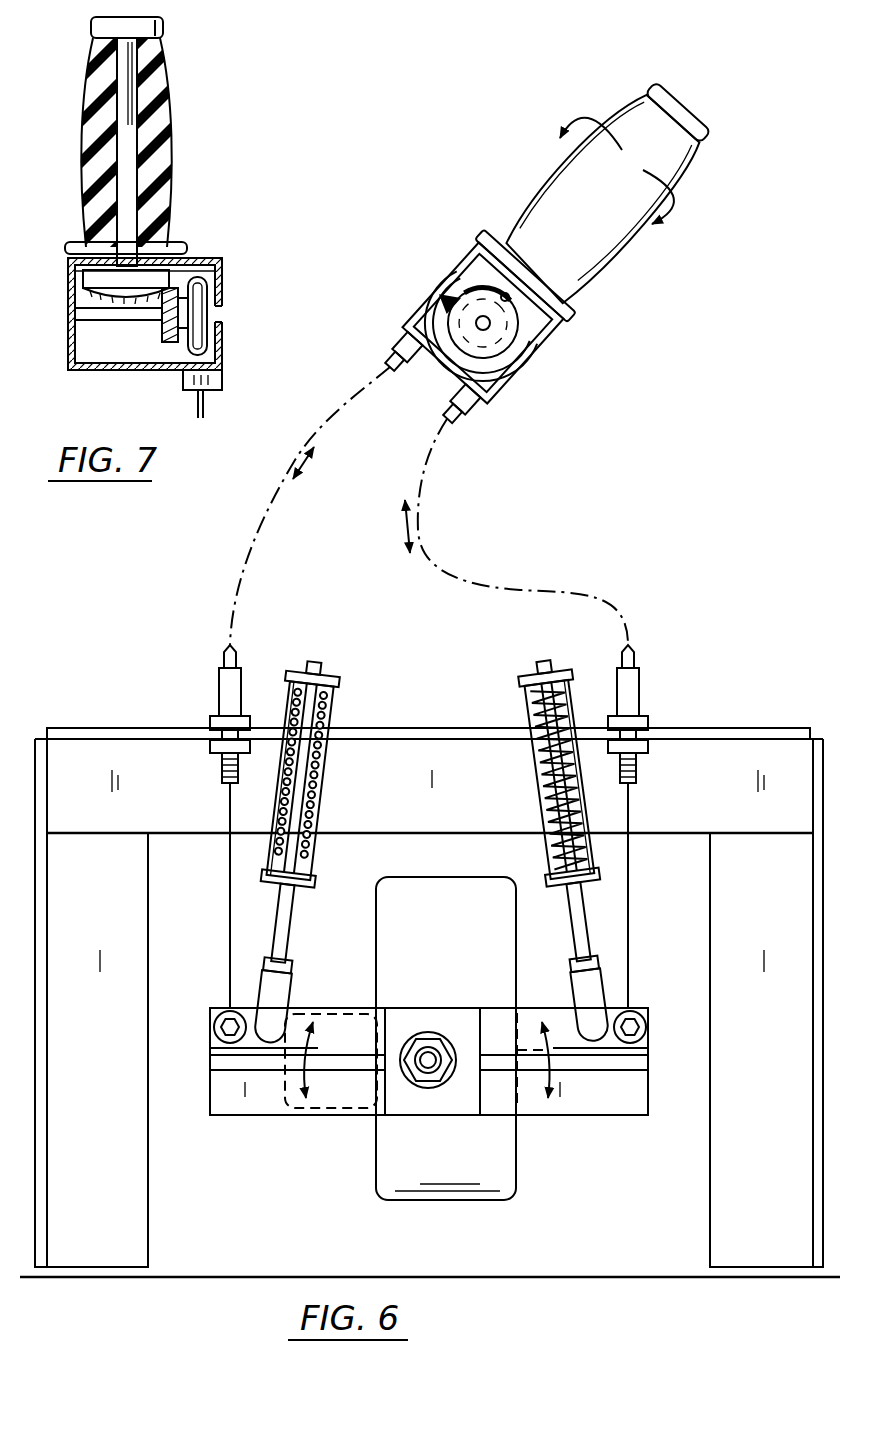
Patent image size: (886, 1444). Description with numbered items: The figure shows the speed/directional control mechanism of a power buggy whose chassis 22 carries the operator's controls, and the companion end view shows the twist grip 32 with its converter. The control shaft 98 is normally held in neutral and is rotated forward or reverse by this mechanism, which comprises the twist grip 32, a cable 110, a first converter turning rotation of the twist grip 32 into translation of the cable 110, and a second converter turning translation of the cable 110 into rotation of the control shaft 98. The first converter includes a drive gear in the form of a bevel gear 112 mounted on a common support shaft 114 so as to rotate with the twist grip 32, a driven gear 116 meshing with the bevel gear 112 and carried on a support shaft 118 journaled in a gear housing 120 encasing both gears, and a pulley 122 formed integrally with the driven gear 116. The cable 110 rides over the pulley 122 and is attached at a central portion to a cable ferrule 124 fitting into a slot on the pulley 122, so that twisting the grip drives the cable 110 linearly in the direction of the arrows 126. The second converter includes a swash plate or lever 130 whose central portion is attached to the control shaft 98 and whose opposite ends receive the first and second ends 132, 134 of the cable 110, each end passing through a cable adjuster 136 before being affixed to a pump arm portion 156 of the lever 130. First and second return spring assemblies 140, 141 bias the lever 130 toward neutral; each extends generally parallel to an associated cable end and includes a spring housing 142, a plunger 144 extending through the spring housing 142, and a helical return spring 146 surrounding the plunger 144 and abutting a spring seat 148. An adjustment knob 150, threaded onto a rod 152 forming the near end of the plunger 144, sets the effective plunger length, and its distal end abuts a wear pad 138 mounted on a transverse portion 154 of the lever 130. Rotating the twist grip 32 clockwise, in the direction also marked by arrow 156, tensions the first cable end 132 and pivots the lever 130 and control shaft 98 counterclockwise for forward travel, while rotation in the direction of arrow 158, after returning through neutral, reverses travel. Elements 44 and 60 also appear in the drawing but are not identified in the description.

In FIG. 6, the chassis 22 is at (812, 732).
In FIG. 7, the twist grip 32 is at (165, 119).
In FIG. 7, the handle assembly 44 is at (172, 63).
In FIG. 6, the handle assembly 44 is at (702, 152).
In FIG. 6, the pivot housing 60 is at (455, 1183).
In FIG. 6, the control shaft 98 is at (420, 1068).
In FIG. 7, the cable 110 is at (207, 408).
In FIG. 6, the cable 110 is at (380, 381).
In FIG. 7, the bevel gear 112 is at (95, 280).
In FIG. 6, the bevel gear 112 is at (468, 290).
In FIG. 7, the common support shaft 114 is at (122, 128).
In FIG. 7, the driven gear 116 is at (167, 341).
In FIG. 6, the driven gear 116 is at (446, 372).
In FIG. 7, the support shaft 118 is at (100, 318).
In FIG. 6, the support shaft 118 is at (476, 323).
In FIG. 7, the gear housing 120 is at (223, 340).
In FIG. 6, the gear housing 120 is at (568, 314).
In FIG. 7, the pulley 122 is at (212, 288).
In FIG. 6, the pulley 122 is at (518, 350).
In FIG. 6, the cable ferrule 124 is at (472, 268).
In FIG. 6, the arrows 126 is at (300, 470).
In FIG. 6, the lever 130 is at (248, 1100).
In FIG. 6, the first end of the cable 132 is at (630, 922).
In FIG. 6, the second end of the cable 134 is at (228, 932).
In FIG. 6, the cable adjuster 136 is at (218, 722).
In FIG. 6, the wear pad 138 is at (212, 1040).
In FIG. 6, the first return spring assembly 140 is at (522, 676).
In FIG. 6, the second return spring assembly 141 is at (300, 655).
In FIG. 6, the spring housing 142 is at (332, 775).
In FIG. 6, the plunger 144 is at (330, 712).
In FIG. 6, the helical return spring 146 is at (312, 822).
In FIG. 6, the spring seat 148 is at (306, 880).
In FIG. 6, the adjustment knob 150 is at (288, 978).
In FIG. 6, the rod 152 is at (318, 663).
In FIG. 6, the transverse portion 154 is at (632, 1110).
In FIG. 6, the pump arm portion 156 is at (523, 1105).
In FIG. 6, the arrow 158 is at (678, 214).